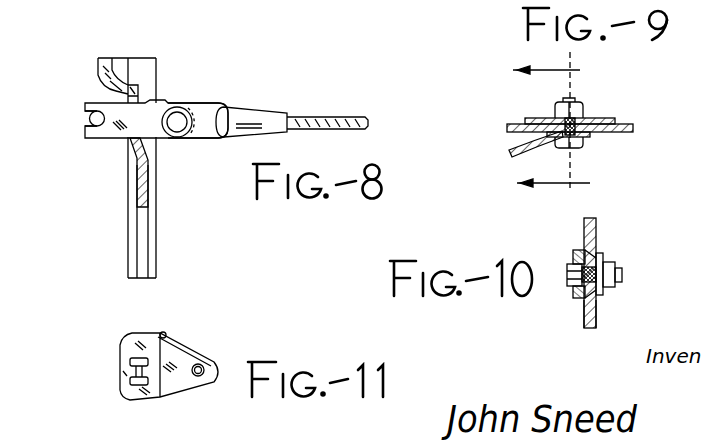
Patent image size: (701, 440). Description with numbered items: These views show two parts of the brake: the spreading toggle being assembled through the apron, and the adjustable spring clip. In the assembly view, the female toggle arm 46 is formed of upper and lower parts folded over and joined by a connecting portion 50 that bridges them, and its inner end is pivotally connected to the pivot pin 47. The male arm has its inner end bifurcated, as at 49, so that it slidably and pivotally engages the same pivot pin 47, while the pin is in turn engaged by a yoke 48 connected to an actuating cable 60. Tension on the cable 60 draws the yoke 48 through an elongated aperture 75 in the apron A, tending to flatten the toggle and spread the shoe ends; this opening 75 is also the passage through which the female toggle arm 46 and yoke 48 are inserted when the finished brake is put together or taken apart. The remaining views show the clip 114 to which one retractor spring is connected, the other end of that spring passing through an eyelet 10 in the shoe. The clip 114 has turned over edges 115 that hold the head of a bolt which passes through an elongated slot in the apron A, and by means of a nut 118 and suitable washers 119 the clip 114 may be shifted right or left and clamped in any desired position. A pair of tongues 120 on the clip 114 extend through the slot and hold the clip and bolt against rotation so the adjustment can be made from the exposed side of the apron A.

In FIG. 9, the eyelet 10 is at (537, 127).
In FIG. 8, the female toggle arm 46 is at (133, 116).
In FIG. 8, the pivot pin 47 is at (178, 126).
In FIG. 8, the yoke 48 is at (212, 110).
In FIG. 8, the bifurcated end 49 is at (97, 119).
In FIG. 8, the connecting portion 50 is at (160, 103).
In FIG. 8, the actuating cable 60 is at (327, 107).
In FIG. 8, the aperture in the apron 75 is at (128, 140).
In FIG. 8, the plate A is at (147, 195).
In FIG. 9, the plate A is at (620, 125).
In FIG. 9, the clip 114 is at (542, 144).
In FIG. 10, the clip 114 is at (582, 311).
In FIG. 11, the clip 114 is at (188, 362).
In FIG. 10, the turned over edges 115 is at (574, 257).
In FIG. 11, the turned over edges 115 is at (167, 337).
In FIG. 9, the nut 118 is at (580, 110).
In FIG. 10, the nut 118 is at (615, 265).
In FIG. 9, the washers 119 is at (603, 118).
In FIG. 10, the washers 119 is at (600, 262).
In FIG. 9, the tongues 120 is at (588, 134).
In FIG. 10, the tongues 120 is at (583, 241).
In FIG. 11, the tongues 120 is at (137, 357).